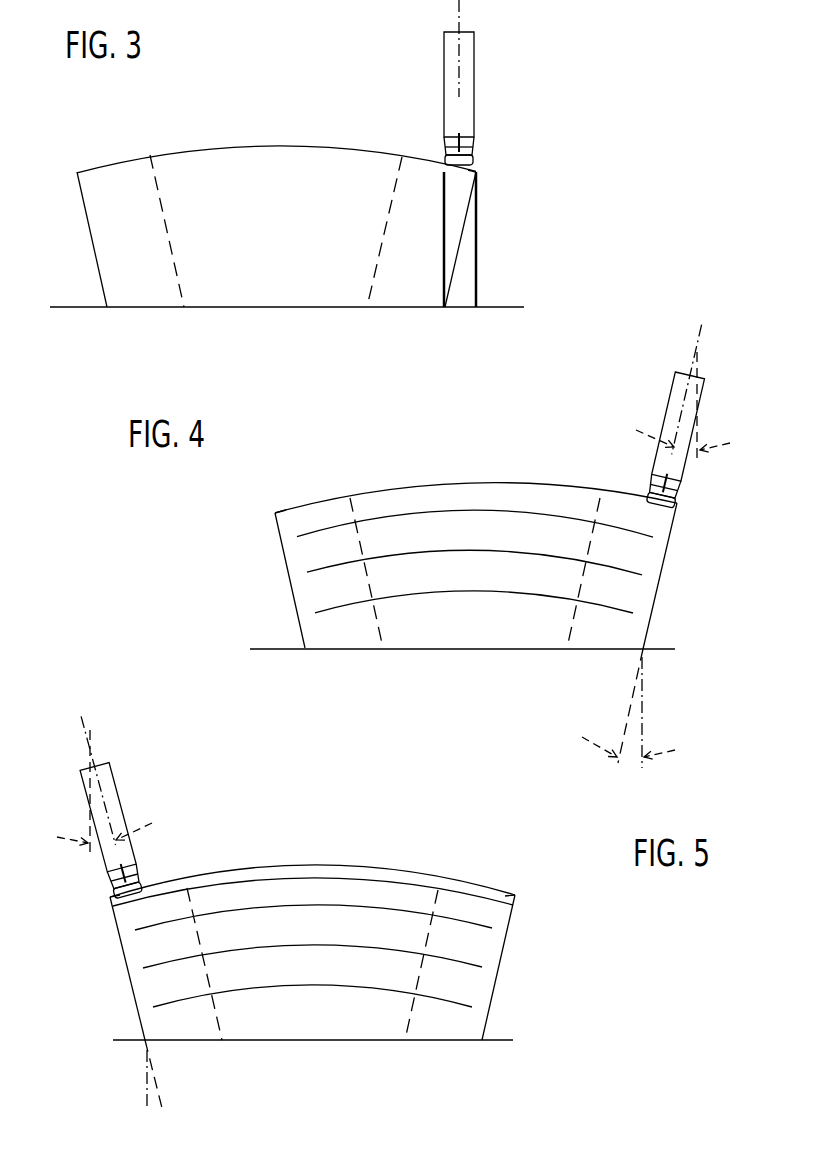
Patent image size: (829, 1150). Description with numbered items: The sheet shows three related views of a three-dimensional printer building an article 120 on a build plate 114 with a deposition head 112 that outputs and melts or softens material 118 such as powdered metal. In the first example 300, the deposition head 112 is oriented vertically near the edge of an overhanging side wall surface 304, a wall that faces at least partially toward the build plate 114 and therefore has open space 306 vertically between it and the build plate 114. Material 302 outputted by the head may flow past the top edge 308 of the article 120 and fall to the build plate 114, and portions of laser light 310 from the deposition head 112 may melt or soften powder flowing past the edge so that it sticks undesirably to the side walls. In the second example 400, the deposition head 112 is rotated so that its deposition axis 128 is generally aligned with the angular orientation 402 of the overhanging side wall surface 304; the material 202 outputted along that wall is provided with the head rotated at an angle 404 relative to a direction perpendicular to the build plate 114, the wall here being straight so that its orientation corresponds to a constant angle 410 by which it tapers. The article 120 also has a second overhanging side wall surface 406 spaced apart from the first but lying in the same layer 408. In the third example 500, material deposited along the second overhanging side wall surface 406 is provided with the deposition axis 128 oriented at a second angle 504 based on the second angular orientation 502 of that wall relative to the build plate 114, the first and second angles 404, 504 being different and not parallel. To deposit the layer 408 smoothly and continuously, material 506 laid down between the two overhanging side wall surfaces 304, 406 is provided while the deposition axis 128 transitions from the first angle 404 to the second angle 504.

In FIG. 3, the deposition head 112 is at (444, 87).
In FIG. 4, the deposition head 112 is at (675, 381).
In FIG. 5, the deposition head 112 is at (116, 773).
In FIG. 3, the build plate 114 is at (75, 308).
In FIG. 4, the build plate 114 is at (275, 650).
In FIG. 5, the build plate 114 is at (498, 1041).
In FIG. 3, the material 118 is at (473, 162).
In FIG. 3, the article 120 is at (213, 157).
In FIG. 4, the article 120 is at (402, 492).
In FIG. 5, the article 120 is at (248, 895).
In FIG. 3, the deposition axis 128 is at (460, 20).
In FIG. 4, the deposition axis 128 is at (700, 337).
In FIG. 5, the deposition axis 128 is at (88, 731).
In FIG. 4, the material 202 is at (652, 483).
In FIG. 5, the material 202 is at (139, 874).
In FIG. 3, the example 300 is at (535, 40).
In FIG. 3, the material 302 is at (477, 236).
In FIG. 3, the overhanging side wall surface 304 is at (466, 248).
In FIG. 4, the overhanging side wall surface 304 is at (665, 585).
In FIG. 5, the overhanging side wall surface 304 is at (505, 979).
In FIG. 3, the open space 306 is at (466, 282).
In FIG. 3, the top edge 308 is at (477, 172).
In FIG. 4, the top edge 308 is at (678, 511).
In FIG. 5, the top edge 308 is at (520, 905).
In FIG. 3, the laser light 310 is at (444, 147).
In FIG. 4, the example 400 is at (356, 468).
In FIG. 4, the angular orientation 402 is at (628, 707).
In FIG. 4, the angle 404 is at (716, 445).
In FIG. 4, the second overhanging side wall surface 406 is at (284, 580).
In FIG. 5, the second overhanging side wall surface 406 is at (117, 977).
In FIG. 4, the layer 408 is at (272, 509).
In FIG. 5, the layer 408 is at (106, 903).
In FIG. 4, the constant angle 410 is at (660, 750).
In FIG. 5, the example 500 is at (472, 852).
In FIG. 5, the second angular orientation 502 is at (156, 1083).
In FIG. 5, the second angle 504 is at (131, 828).
In FIG. 5, the material 506 is at (360, 862).